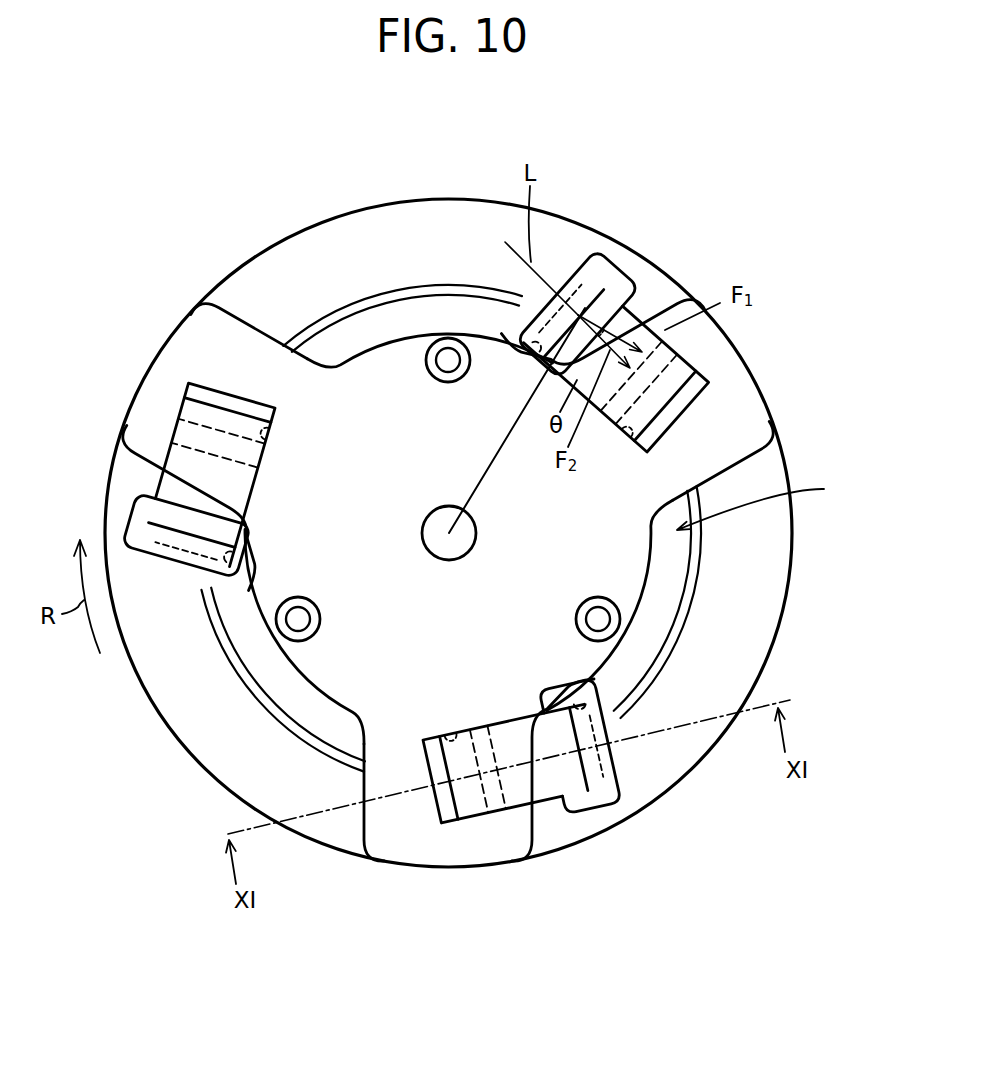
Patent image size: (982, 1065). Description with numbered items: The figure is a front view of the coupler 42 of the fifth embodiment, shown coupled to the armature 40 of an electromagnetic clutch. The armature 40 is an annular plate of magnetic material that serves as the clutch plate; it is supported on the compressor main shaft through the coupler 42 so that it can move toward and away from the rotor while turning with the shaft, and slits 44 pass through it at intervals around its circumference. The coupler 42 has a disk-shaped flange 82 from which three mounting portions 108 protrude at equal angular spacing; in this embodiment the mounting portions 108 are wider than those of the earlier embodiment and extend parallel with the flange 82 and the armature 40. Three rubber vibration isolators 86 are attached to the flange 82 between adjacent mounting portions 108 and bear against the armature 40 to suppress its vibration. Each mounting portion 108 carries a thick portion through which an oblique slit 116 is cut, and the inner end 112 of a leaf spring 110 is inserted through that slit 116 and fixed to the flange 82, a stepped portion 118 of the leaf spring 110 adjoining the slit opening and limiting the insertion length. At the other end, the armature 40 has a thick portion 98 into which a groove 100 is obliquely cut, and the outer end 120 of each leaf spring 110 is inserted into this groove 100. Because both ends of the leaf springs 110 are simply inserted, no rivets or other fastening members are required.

The armature 40 is at (758, 580).
The coupler 42 is at (766, 502).
The slits 44 is at (689, 593).
The flange 82 is at (640, 553).
The rubber vibration isolators 86 is at (449, 338).
The thick portion 98 is at (620, 280).
The groove 100 is at (250, 560).
The mounting portions 108 is at (735, 420).
The leaf spring 110 is at (641, 336).
The inner end 112 is at (718, 398).
The oblique slit 116 is at (268, 428).
The stepped portion 118 is at (700, 345).
The outer end 120 is at (587, 287).